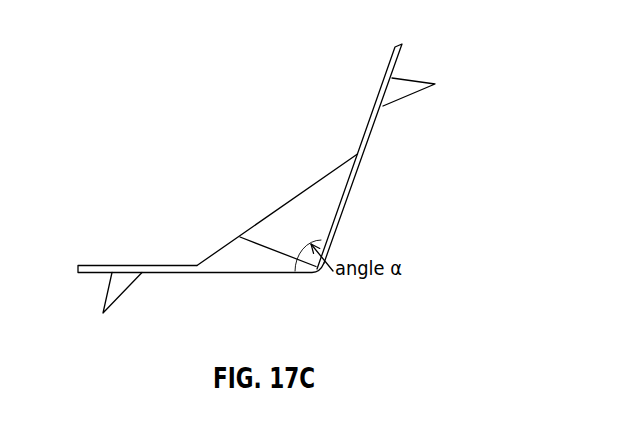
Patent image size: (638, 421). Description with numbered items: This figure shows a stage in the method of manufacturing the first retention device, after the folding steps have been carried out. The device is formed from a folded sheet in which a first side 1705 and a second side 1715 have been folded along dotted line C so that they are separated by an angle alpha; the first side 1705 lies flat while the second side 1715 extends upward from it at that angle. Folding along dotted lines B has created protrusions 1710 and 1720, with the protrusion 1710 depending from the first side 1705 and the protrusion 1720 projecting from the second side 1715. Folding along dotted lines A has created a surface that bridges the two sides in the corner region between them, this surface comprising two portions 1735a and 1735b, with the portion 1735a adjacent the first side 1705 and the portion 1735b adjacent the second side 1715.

The first side 1705 is at (232, 274).
The protrusion 1710 is at (116, 286).
The second side 1715 is at (362, 160).
The protrusion 1720 is at (394, 86).
The portion of surface 1735a is at (277, 267).
The portion of surface 1735b is at (328, 236).